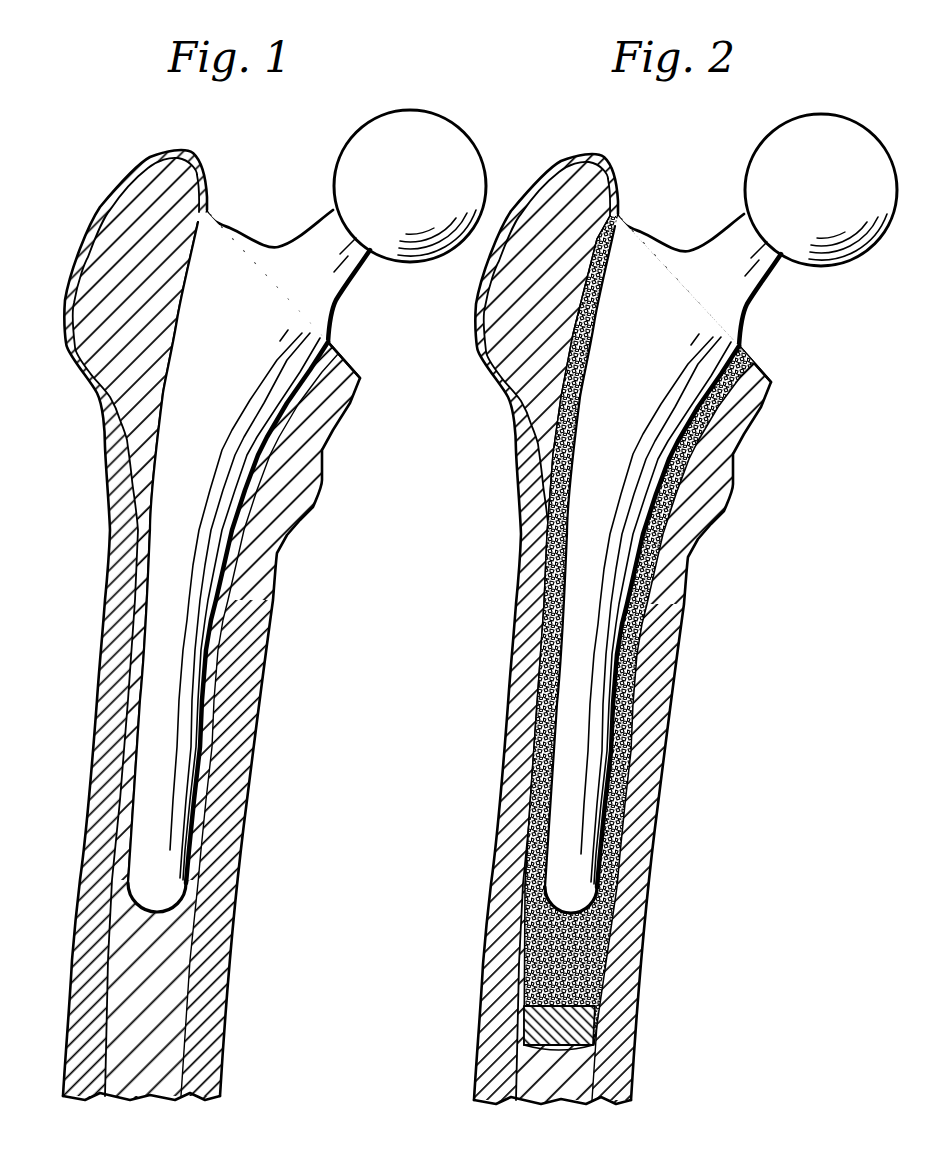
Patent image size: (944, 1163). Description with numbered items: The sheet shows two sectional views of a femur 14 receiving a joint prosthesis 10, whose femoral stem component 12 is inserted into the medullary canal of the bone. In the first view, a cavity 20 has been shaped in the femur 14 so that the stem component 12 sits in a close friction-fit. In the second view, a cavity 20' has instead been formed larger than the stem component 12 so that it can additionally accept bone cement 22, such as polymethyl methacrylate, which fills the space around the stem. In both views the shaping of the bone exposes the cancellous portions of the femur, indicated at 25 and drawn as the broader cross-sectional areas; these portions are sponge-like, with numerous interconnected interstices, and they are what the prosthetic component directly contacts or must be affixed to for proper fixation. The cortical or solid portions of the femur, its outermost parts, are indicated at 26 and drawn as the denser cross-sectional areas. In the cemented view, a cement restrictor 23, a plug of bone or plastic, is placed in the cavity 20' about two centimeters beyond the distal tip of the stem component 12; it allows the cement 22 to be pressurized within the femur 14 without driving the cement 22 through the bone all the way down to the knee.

In FIG. 1, the joint prosthesis 10 is at (283, 190).
In FIG. 2, the joint prosthesis 10 is at (721, 502).
In FIG. 1, the femoral stem component 12 is at (160, 568).
In FIG. 2, the femoral stem component 12 is at (595, 569).
In FIG. 1, the femur 14 is at (240, 840).
In FIG. 2, the femur 14 is at (622, 629).
In FIG. 1, the cavity 20 is at (122, 552).
In FIG. 2, the cavity 20' is at (520, 551).
In FIG. 2, the bone cement 22 is at (599, 630).
In FIG. 2, the cement restrictor 23 is at (512, 1028).
In FIG. 1, the cancellous portions 25 is at (148, 195).
In FIG. 2, the cancellous portions 25 is at (622, 629).
In FIG. 1, the cortical portions 26 is at (66, 318).
In FIG. 2, the cortical portions 26 is at (609, 627).